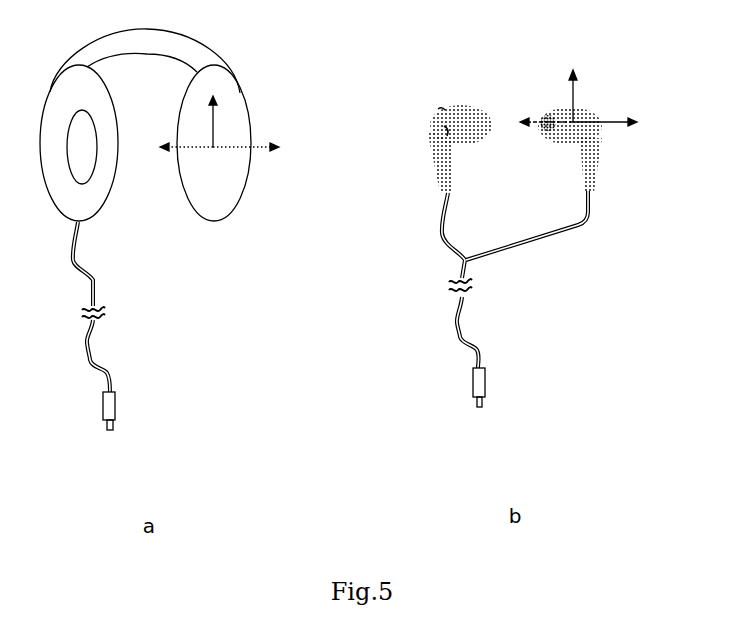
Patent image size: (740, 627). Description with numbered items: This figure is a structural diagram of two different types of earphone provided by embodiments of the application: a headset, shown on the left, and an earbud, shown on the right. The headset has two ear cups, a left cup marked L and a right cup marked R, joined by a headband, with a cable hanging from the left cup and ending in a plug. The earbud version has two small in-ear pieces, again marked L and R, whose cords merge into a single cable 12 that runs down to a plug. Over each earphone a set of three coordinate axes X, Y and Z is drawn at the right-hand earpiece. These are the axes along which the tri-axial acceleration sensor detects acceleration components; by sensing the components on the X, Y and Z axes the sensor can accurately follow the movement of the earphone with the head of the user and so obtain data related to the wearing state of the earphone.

The cable 12 is at (502, 257).
The left ear cup / left earbud L is at (266, 143).
The right ear cup / right earbud R is at (400, 143).
The X coordinate axis X is at (436, 135).
The Y coordinate axis Y is at (392, 99).
The Z coordinate axis Z is at (358, 135).